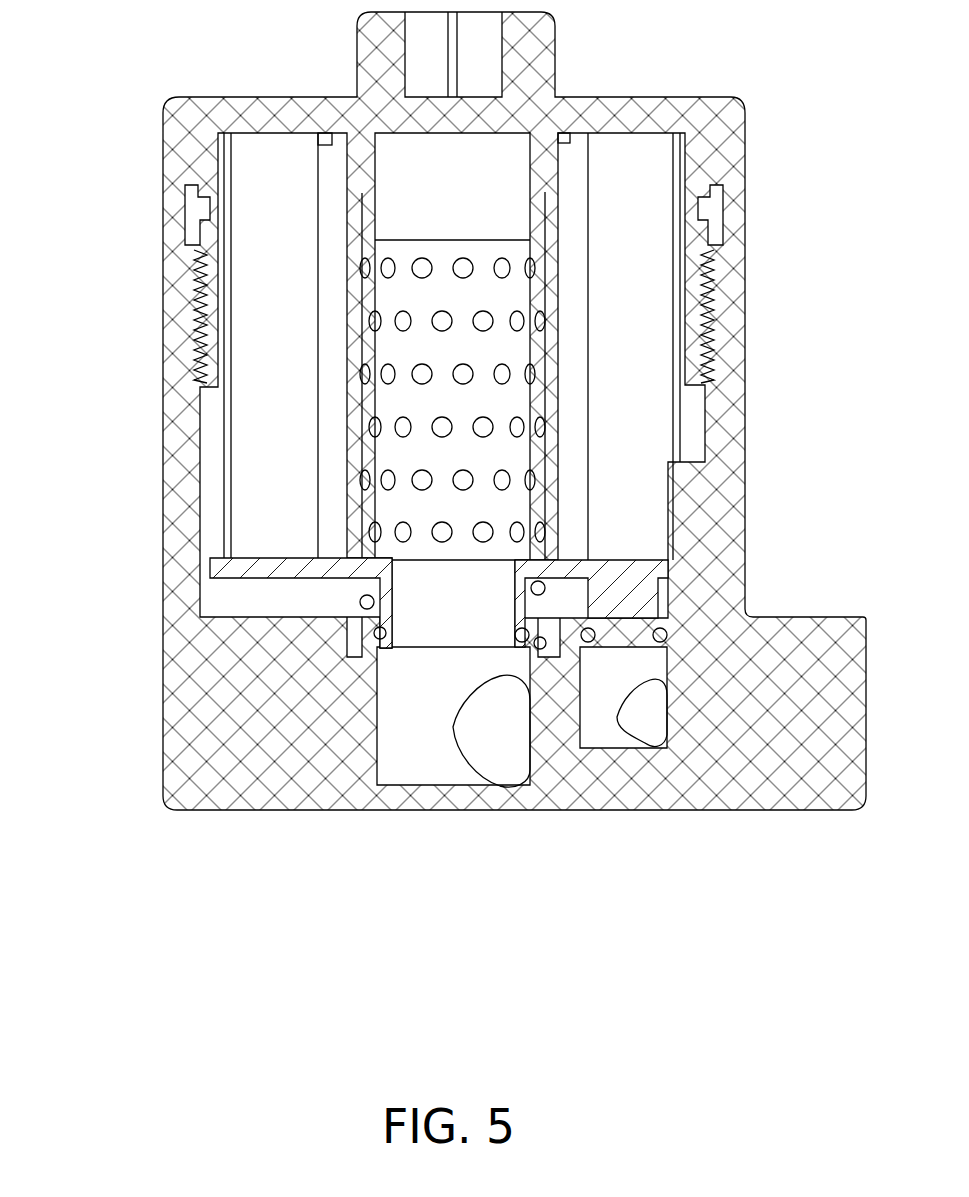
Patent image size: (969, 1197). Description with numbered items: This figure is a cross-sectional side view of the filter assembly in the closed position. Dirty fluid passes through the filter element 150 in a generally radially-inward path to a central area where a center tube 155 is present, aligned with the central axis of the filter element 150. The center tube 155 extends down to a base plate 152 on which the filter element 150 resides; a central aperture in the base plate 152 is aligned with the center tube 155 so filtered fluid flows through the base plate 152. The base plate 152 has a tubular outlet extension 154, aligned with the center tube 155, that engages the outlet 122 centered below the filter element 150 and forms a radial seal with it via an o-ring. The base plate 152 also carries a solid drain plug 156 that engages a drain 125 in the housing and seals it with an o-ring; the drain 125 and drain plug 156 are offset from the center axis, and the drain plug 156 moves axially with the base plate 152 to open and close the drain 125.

The outlet 122 is at (495, 763).
The drain 125 is at (647, 737).
The filter element 150 is at (225, 433).
The base plate 152 is at (212, 570).
The outlet extension 154 is at (397, 600).
The center tube 155 is at (460, 240).
The drain plug 156 is at (660, 603).